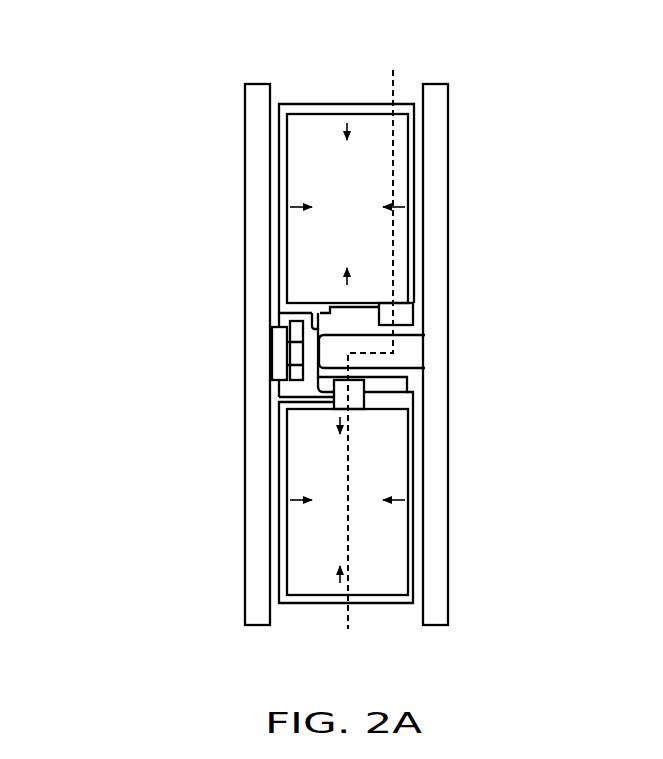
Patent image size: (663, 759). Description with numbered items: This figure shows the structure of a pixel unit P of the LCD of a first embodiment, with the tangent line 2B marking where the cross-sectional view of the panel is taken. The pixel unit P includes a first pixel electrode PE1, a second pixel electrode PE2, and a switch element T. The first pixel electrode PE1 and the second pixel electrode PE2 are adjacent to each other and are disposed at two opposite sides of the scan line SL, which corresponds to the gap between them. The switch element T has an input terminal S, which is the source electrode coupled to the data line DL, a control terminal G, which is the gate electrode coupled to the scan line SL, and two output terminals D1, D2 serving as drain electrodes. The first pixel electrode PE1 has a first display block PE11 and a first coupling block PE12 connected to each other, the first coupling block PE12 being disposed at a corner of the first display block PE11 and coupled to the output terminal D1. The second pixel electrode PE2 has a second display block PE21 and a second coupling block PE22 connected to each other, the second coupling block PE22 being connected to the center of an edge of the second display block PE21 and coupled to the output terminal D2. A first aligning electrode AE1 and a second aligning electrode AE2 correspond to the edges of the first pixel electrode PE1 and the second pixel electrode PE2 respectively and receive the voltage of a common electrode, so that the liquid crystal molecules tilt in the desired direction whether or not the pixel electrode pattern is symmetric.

The pixel unit P is at (216, 56).
The data line DL is at (252, 107).
The tangent line 2B-2B' 2B is at (374, 349).
The first aligning electrode AE1 is at (410, 110).
The second aligning electrode AE2 is at (410, 599).
The first pixel electrode PE1 is at (467, 224).
The first display block PE11 is at (402, 272).
The first coupling block PE12 is at (402, 320).
The second pixel electrode PE2 is at (467, 484).
The second display block PE21 is at (403, 440).
The second coupling block PE22 is at (360, 395).
The scan line SL is at (410, 355).
The switch element T is at (234, 312).
The output terminal (drain electrode) D1 is at (312, 328).
The control terminal (gate electrode) G is at (282, 322).
The input terminal (source electrode) S is at (274, 343).
The output terminal (drain electrode) D2 is at (322, 388).